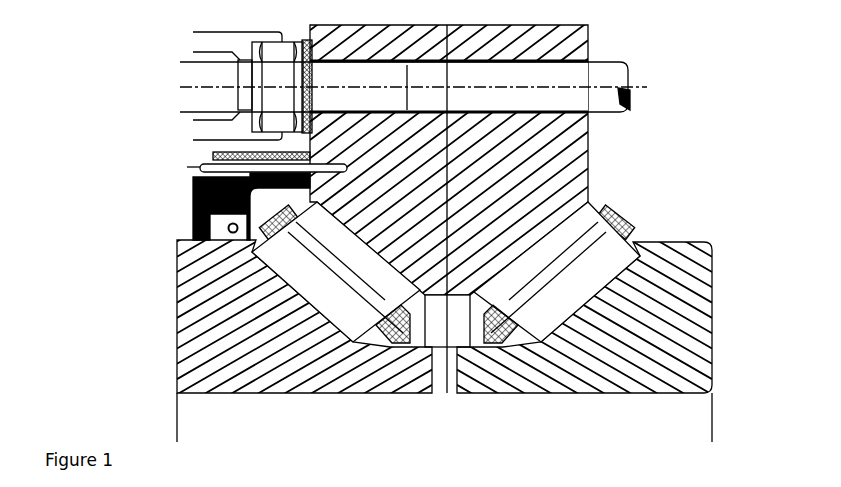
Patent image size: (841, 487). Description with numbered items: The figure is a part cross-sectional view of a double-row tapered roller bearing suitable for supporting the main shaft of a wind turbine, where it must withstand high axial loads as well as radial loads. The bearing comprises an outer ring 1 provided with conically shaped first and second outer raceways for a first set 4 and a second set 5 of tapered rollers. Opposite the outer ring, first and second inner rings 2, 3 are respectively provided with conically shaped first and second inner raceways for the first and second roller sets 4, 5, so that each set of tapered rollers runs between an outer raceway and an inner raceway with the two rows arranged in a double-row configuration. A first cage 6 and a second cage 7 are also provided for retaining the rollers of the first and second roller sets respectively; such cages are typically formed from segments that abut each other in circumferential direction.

The outer ring 1 is at (590, 147).
The first inner ring 2 is at (177, 302).
The second inner ring 3 is at (673, 242).
The first set of tapered rollers 4 is at (352, 333).
The second set of tapered rollers 5 is at (538, 327).
The first cage 6 is at (388, 330).
The second cage 7 is at (500, 332).